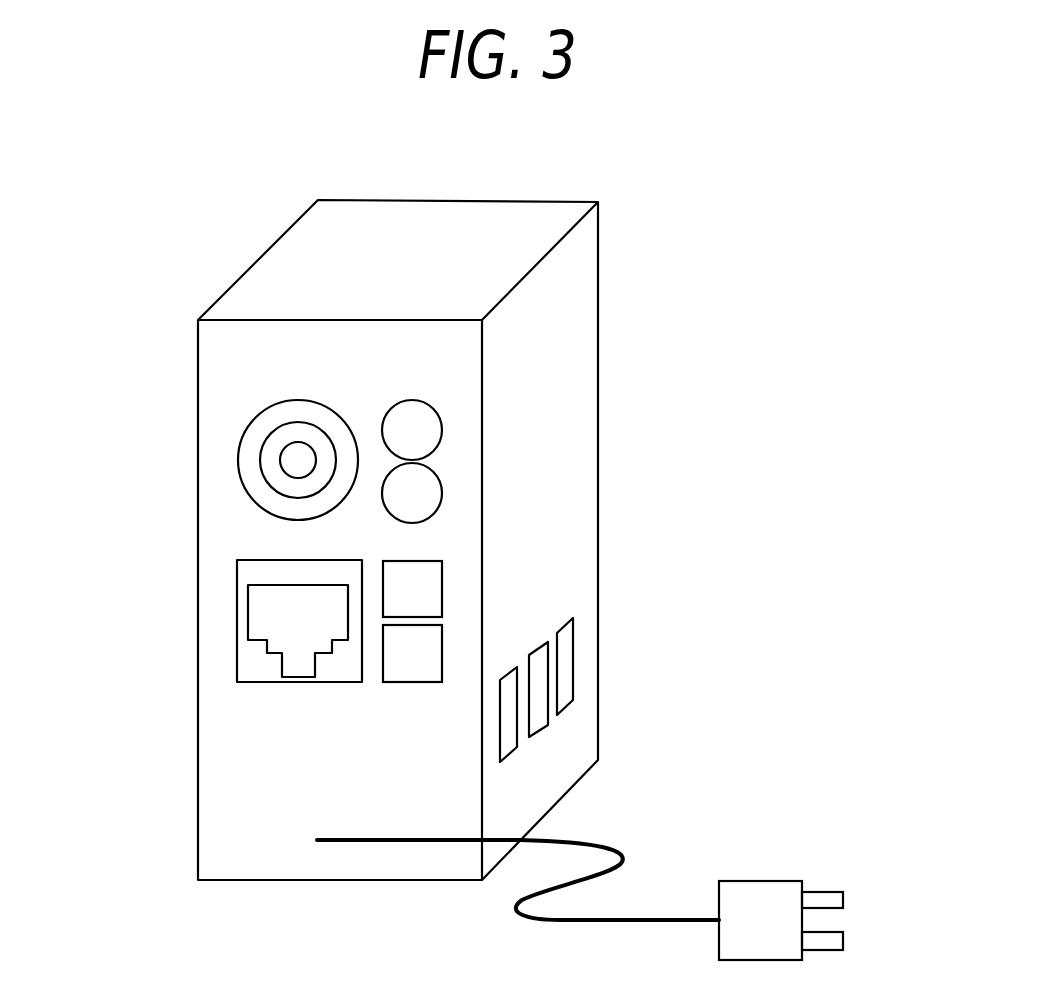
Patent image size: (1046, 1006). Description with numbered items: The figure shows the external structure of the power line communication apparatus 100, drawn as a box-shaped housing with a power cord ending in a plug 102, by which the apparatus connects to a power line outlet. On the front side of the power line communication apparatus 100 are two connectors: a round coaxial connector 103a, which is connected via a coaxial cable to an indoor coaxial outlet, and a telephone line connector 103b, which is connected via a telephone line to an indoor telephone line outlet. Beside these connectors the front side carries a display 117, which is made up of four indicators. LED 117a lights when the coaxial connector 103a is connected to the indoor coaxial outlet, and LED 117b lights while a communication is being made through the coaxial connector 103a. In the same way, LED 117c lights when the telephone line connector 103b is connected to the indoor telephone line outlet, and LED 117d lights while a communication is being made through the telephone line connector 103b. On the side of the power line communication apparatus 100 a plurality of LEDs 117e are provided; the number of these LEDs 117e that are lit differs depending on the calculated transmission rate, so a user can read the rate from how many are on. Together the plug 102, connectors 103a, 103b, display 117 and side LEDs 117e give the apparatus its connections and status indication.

The power line communication apparatus 100 is at (252, 266).
The plug 102 is at (783, 880).
The coaxial connector 103a is at (237, 448).
The telephone line connector 103b is at (237, 637).
The display 117 is at (798, 303).
The LED 117a is at (442, 418).
The LED 117b is at (442, 483).
The LED 117c is at (442, 576).
The LED 117d is at (442, 642).
The LEDs 117e is at (573, 663).